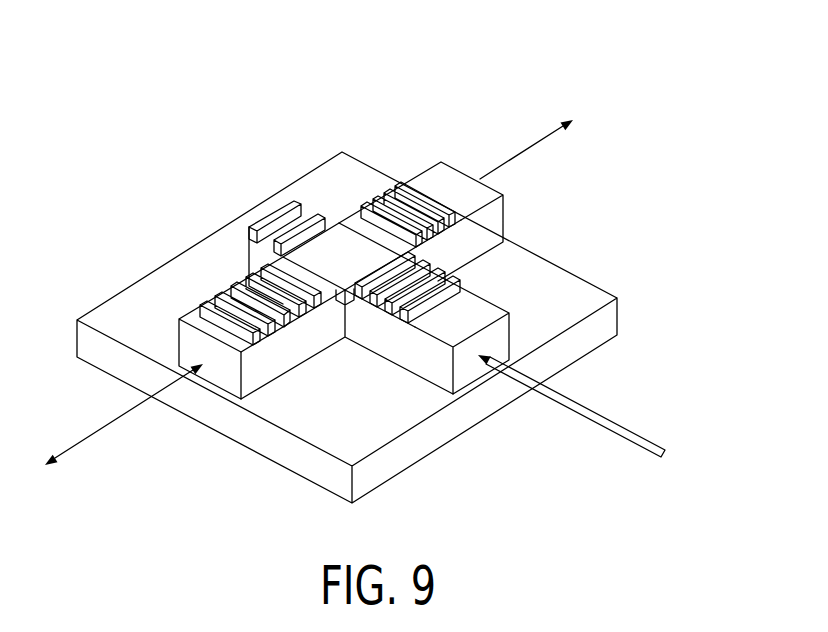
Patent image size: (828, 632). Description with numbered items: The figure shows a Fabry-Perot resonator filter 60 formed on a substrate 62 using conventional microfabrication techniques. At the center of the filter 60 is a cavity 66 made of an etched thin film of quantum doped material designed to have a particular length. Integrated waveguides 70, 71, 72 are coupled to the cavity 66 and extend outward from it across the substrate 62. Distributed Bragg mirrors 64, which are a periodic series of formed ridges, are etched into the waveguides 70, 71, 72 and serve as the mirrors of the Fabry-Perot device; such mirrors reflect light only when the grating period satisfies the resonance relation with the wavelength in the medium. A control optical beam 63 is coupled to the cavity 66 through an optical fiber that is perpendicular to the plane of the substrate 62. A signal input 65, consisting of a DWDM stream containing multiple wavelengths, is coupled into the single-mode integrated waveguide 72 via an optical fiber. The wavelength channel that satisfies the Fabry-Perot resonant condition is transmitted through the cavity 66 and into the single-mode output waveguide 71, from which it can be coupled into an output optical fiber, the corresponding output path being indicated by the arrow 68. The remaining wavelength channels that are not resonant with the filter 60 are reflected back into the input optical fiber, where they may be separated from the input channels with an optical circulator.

The Fabry-Perot resonator filter 60 is at (550, 60).
The substrate 62 is at (637, 289).
The control optical beam 63 is at (615, 421).
The distributed Bragg mirrors 64 is at (273, 212).
The signal input 65 is at (184, 372).
The cavity 66 is at (342, 239).
The optical path 68 is at (511, 162).
The integrated waveguide 70 is at (473, 313).
The single-mode output waveguide 71 is at (490, 220).
The single-mode integrated waveguide 72 is at (203, 328).